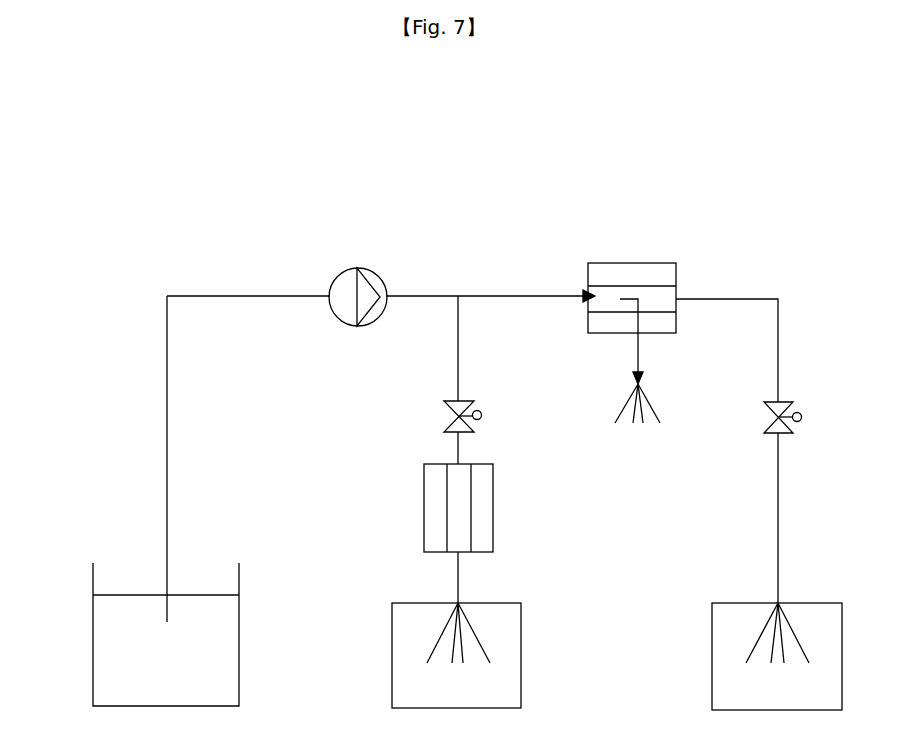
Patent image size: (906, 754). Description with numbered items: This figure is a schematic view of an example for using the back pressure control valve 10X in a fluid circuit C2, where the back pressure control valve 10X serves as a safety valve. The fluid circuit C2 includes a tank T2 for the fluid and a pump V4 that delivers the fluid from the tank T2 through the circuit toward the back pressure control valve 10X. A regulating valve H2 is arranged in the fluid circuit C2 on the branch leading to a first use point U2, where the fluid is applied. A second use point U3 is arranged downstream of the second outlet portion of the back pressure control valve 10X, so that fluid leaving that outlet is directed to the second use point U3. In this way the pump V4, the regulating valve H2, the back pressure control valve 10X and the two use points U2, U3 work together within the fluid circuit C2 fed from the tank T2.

The fluid circuit C2 is at (166, 292).
The pump V4 is at (376, 279).
The back pressure control valve 10X is at (670, 271).
The regulating valve H2 is at (488, 518).
The first use point U2 is at (462, 601).
The second use point U3 is at (782, 601).
The tank T2 is at (105, 663).